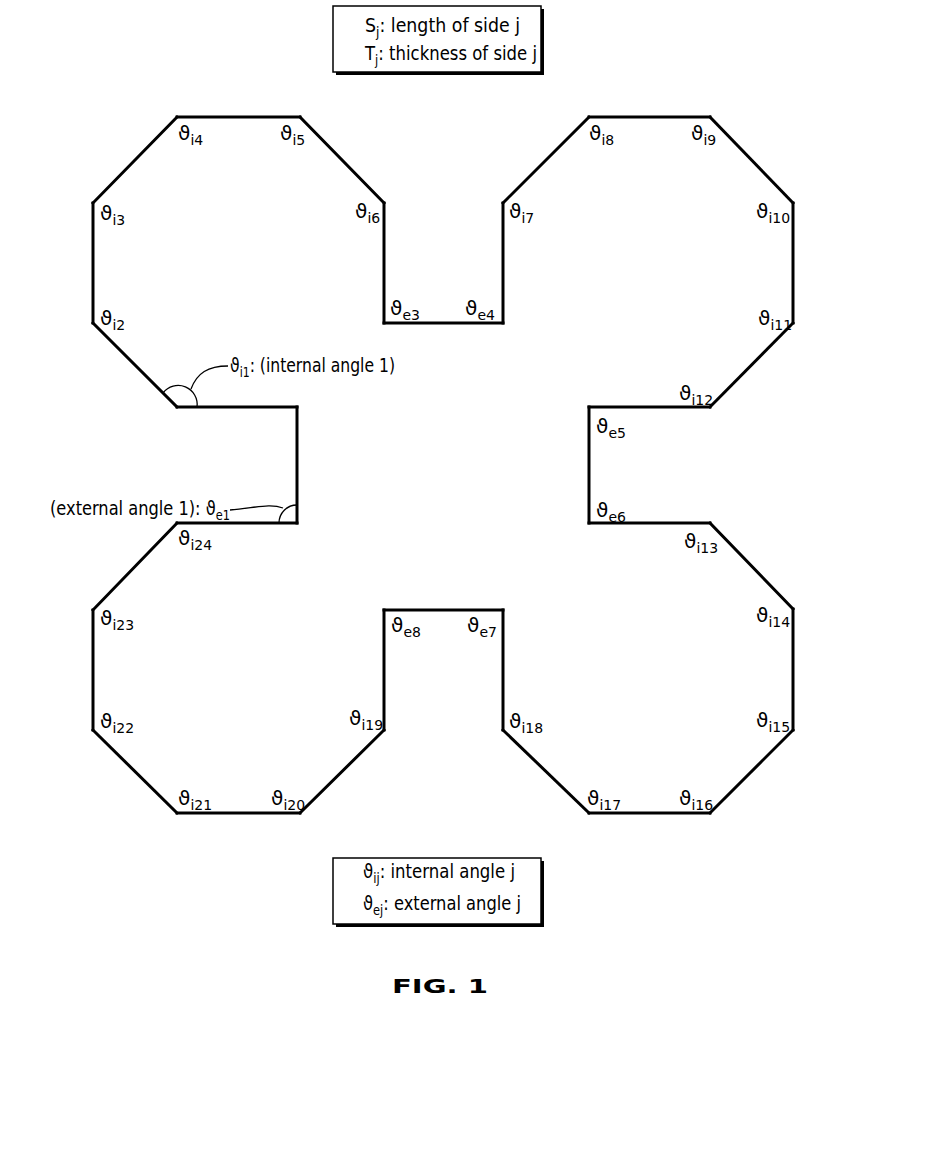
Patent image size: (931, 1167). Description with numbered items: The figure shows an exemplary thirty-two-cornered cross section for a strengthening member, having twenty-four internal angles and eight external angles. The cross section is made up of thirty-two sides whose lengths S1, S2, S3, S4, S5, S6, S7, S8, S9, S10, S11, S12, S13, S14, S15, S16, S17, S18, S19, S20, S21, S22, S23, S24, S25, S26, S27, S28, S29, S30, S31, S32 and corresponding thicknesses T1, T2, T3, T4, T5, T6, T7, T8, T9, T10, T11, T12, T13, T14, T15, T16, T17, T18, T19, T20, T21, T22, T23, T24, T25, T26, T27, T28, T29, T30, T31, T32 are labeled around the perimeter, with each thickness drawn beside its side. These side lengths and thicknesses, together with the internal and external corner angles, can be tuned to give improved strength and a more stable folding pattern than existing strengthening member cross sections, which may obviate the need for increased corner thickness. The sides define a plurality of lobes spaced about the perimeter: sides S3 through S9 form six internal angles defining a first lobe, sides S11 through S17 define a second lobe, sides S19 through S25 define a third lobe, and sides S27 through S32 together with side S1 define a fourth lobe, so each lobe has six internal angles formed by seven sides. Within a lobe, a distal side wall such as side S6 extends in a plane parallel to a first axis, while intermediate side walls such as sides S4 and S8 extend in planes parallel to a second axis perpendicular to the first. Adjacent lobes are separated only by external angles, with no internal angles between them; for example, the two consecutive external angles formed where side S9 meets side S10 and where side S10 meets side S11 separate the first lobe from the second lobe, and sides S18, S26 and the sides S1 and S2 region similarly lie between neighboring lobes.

The side length S1 is at (243, 501).
The side thickness T1 is at (298, 539).
The side length S2 is at (299, 465).
The side thickness T2 is at (311, 465).
The side length S3 is at (237, 409).
The side thickness T3 is at (237, 392).
The intermediate side wall S4 is at (135, 365).
The side thickness T4 is at (135, 365).
The side length S5 is at (94, 263).
The side thickness T5 is at (107, 263).
The distal side wall S6 is at (135, 160).
The side thickness T6 is at (135, 160).
The side length S7 is at (238, 119).
The side thickness T7 is at (238, 132).
The intermediate side wall S8 is at (342, 160).
The side thickness T8 is at (342, 160).
The side length S9 is at (385, 263).
The side thickness T9 is at (371, 263).
The side length S10 is at (443, 325).
The side thickness T10 is at (443, 339).
The side length S11 is at (505, 263).
The side thickness T11 is at (520, 263).
The side length S12 is at (546, 160).
The side thickness T12 is at (546, 160).
The side length S13 is at (649, 119).
The side thickness T13 is at (649, 132).
The side length S14 is at (751, 160).
The side thickness T14 is at (751, 160).
The side length S15 is at (796, 263).
The side thickness T15 is at (777, 263).
The side length S16 is at (751, 365).
The side thickness T16 is at (751, 365).
The side length S17 is at (649, 411).
The side thickness T17 is at (649, 394).
The side length S18 is at (591, 465).
The side thickness T18 is at (573, 465).
The side length S19 is at (649, 527).
The side thickness T19 is at (649, 539).
The side length S20 is at (751, 566).
The side thickness T20 is at (751, 566).
The side length S21 is at (796, 669).
The side thickness T21 is at (777, 669).
The side length S22 is at (751, 771).
The side thickness T22 is at (751, 771).
The side length S23 is at (649, 816).
The side thickness T23 is at (649, 799).
The side length S24 is at (546, 771).
The side thickness T24 is at (546, 771).
The side length S25 is at (504, 670).
The side thickness T25 is at (520, 670).
The side length S26 is at (443, 611).
The side thickness T26 is at (443, 596).
The side length S27 is at (387, 670).
The side thickness T27 is at (368, 670).
The side length S28 is at (342, 771).
The side thickness T28 is at (342, 771).
The side length S29 is at (238, 816).
The side thickness T29 is at (238, 799).
The side length S30 is at (135, 771).
The side thickness T30 is at (135, 771).
The side length S31 is at (96, 670).
The side thickness T31 is at (111, 670).
The side length S32 is at (135, 566).
The side thickness T32 is at (135, 566).